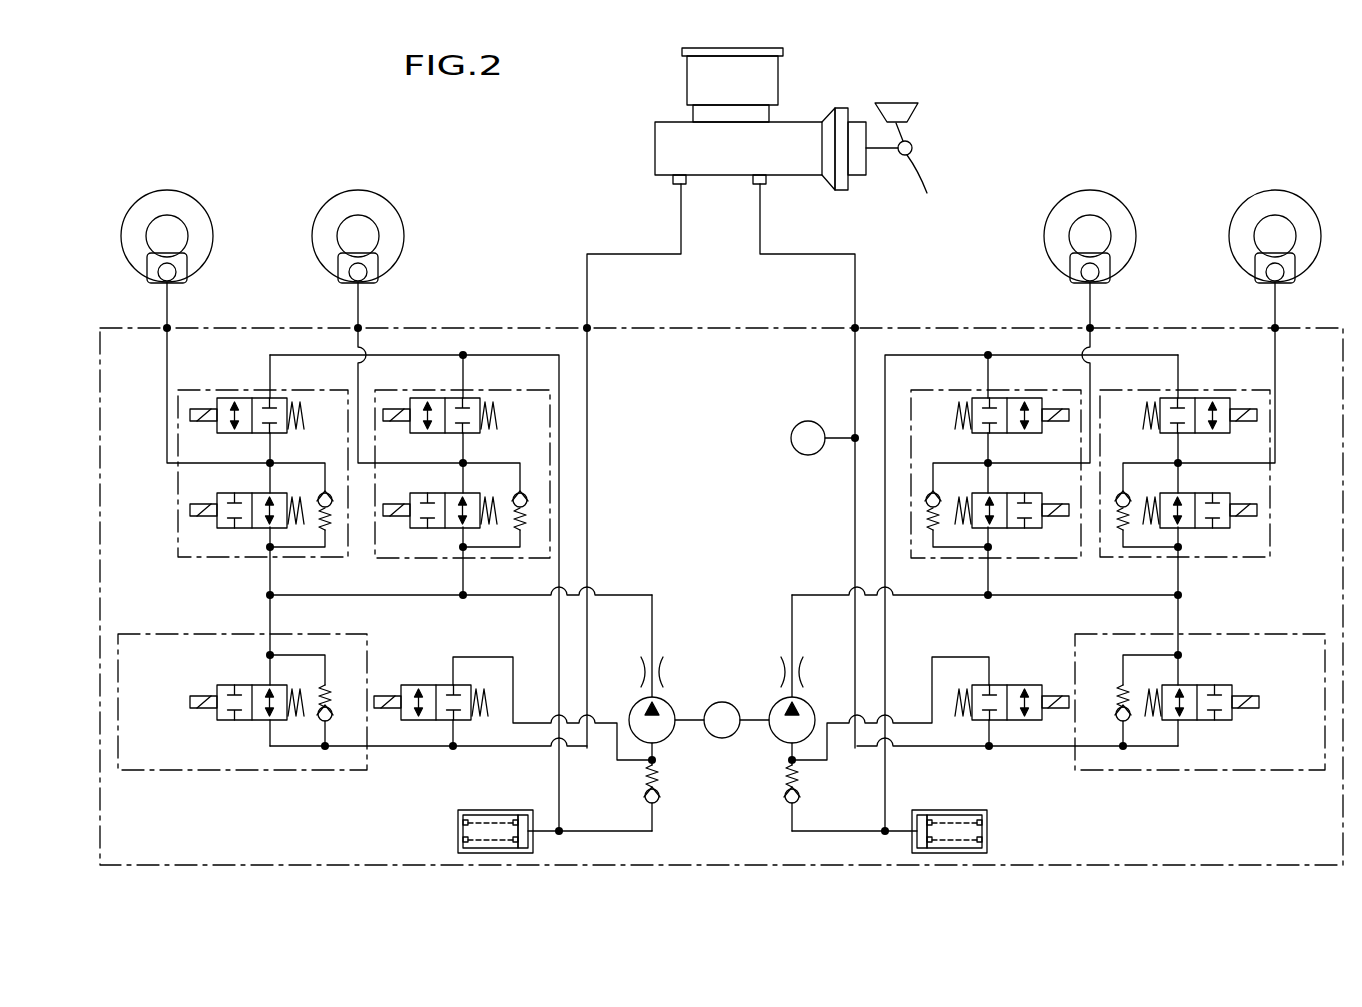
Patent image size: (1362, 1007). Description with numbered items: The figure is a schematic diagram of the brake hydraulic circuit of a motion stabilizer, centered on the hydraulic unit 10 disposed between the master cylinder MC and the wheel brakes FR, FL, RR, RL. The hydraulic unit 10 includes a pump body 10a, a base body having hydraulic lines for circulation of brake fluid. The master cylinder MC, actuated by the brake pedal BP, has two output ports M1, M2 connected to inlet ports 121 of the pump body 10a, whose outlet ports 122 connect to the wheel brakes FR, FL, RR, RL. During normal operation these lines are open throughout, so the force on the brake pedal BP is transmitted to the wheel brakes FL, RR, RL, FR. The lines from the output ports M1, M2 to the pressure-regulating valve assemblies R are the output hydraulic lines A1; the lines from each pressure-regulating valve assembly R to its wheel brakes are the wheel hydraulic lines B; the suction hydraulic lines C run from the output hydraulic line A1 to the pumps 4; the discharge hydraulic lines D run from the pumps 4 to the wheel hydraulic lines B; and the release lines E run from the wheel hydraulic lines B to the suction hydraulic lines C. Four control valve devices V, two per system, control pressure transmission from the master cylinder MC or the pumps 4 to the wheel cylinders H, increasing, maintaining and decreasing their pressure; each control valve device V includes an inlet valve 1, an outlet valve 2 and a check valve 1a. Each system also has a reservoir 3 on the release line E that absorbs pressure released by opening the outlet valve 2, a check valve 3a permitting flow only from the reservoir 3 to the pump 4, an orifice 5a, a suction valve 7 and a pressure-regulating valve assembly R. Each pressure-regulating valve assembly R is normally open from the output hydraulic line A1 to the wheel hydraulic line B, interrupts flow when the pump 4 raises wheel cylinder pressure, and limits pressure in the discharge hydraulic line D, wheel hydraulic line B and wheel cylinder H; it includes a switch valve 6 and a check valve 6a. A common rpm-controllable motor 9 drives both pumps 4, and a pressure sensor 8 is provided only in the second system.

The inlet valve 1 is at (228, 528).
The check valve 1a is at (328, 490).
The outlet valve 2 is at (276, 398).
The reservoir 3 is at (446, 838).
The check valve 3a is at (662, 799).
The pump 4 is at (668, 741).
The orifice 5a is at (661, 671).
The switch valve 6 is at (228, 721).
The check valve 6a is at (332, 710).
The suction valve 7 is at (412, 685).
The pressure sensor 8 is at (791, 438).
The motor 9 is at (722, 702).
The hydraulic unit 10 is at (933, 308).
The pump body 10a is at (291, 866).
The inlet port 121 is at (585, 326).
The outlet port 122 is at (170, 327).
The master cylinder MC is at (655, 148).
The output port M1 is at (676, 184).
The output port M2 is at (764, 184).
The brake pedal BP is at (934, 192).
The wheel brake FL is at (166, 188).
The wheel brake RR is at (357, 188).
The wheel brake RL is at (1091, 188).
The wheel brake FR is at (1276, 188).
The wheel cylinder H is at (170, 270).
The output hydraulic line A1 is at (588, 412).
The wheel hydraulic line B is at (168, 360).
The suction hydraulic line C is at (528, 725).
The discharge hydraulic line D is at (652, 594).
The release line E is at (480, 355).
The control valve device V is at (178, 495).
The pressure-regulating valve assembly R is at (158, 784).